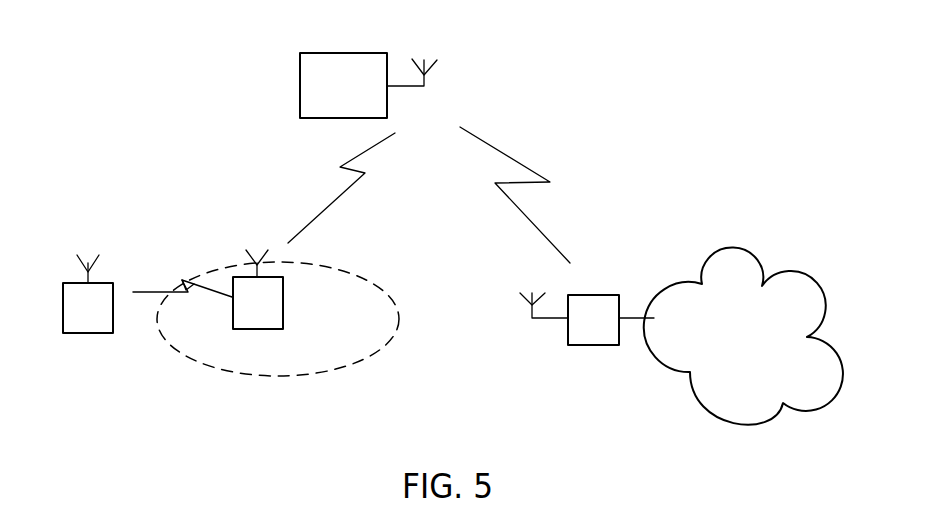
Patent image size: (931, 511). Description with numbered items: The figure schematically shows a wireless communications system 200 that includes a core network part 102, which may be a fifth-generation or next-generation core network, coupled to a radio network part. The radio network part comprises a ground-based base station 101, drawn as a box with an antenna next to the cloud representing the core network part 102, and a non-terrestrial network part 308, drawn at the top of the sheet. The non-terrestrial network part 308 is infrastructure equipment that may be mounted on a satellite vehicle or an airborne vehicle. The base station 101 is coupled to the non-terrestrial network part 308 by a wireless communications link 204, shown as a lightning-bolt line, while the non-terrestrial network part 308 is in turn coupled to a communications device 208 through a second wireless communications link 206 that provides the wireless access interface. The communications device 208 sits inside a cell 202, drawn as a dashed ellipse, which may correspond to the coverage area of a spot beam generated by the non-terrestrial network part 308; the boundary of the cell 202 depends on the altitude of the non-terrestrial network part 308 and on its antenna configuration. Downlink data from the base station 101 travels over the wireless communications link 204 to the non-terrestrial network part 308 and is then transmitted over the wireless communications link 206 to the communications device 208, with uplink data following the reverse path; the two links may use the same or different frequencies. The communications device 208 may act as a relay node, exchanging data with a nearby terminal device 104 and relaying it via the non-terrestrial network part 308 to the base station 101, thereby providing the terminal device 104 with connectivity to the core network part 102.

The wireless communications system 200 is at (532, 65).
The non-terrestrial network part 308 is at (300, 88).
The wireless communications link 204 is at (515, 158).
The wireless communications link 206 is at (332, 202).
The base station 101 is at (613, 272).
The core network part 102 is at (734, 256).
The terminal device 104 is at (87, 334).
The communications device 208 is at (256, 330).
The cell 202 is at (313, 377).